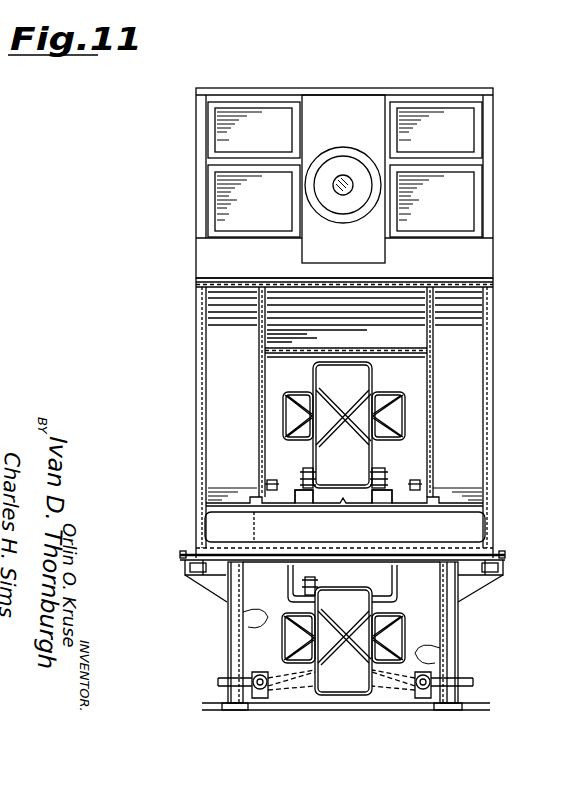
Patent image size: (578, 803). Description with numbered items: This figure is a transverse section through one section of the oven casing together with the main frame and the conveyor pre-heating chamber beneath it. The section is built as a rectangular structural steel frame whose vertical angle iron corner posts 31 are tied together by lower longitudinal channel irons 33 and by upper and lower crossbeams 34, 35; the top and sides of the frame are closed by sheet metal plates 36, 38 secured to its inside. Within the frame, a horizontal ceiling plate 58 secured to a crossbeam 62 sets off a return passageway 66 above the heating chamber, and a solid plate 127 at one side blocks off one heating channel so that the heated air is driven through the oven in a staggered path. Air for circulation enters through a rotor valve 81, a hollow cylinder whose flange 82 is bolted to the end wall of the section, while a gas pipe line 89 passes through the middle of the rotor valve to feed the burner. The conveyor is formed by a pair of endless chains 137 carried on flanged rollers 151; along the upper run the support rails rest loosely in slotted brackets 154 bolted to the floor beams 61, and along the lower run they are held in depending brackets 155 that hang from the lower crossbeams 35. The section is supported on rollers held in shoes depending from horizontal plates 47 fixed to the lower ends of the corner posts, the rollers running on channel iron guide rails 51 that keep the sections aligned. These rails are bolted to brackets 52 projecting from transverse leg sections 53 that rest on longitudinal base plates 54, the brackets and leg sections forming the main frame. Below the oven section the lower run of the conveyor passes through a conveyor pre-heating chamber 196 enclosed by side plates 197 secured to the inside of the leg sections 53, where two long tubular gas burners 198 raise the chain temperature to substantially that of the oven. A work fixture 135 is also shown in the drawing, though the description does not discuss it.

The upper crossbeam 34 is at (337, 94).
The rotor valve 81 is at (337, 143).
The flange 82 is at (355, 150).
The pipe line 89 is at (341, 192).
The sheet metal plate 36 is at (421, 277).
The return passageway 66 is at (410, 337).
The corner post 31 is at (197, 345).
The sheet metal plate 38 is at (207, 371).
The ceiling plate 58 is at (368, 345).
The crossbeam 62 is at (378, 360).
The work fixture 135 is at (406, 413).
The flanged roller 151 is at (302, 473).
The endless chain 137 is at (387, 484).
The floor beam 61 is at (458, 505).
The solid plate 127 is at (254, 531).
The slotted bracket 154 is at (303, 500).
The lower crossbeam 35 is at (358, 566).
The lower longitudinal channel iron 33 is at (180, 553).
The horizontal plate 47 is at (185, 563).
The guide rail 51 is at (190, 571).
The bracket 52 is at (212, 583).
The leg section 53 is at (236, 582).
The depending bracket 155 is at (288, 580).
The side plate 197 is at (232, 636).
The conveyor pre-heating chamber 196 is at (442, 633).
The tubular gas burner 198 is at (262, 675).
The base plate 54 is at (234, 712).